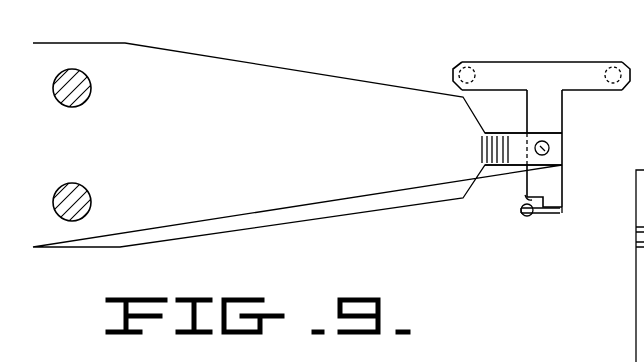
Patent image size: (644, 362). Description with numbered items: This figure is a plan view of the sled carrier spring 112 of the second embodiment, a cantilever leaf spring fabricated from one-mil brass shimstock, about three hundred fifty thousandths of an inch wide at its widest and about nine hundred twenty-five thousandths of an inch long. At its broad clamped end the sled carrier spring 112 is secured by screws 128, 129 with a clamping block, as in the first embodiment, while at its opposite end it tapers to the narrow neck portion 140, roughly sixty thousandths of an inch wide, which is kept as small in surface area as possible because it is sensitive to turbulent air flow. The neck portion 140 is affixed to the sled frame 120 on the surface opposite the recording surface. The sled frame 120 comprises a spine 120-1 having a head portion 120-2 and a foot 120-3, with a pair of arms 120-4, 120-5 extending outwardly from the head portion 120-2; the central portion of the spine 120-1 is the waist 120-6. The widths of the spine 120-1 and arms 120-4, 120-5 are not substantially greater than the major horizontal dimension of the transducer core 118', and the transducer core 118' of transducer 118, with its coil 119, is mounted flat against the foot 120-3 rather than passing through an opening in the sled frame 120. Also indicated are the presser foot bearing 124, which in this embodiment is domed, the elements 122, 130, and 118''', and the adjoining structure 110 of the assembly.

The sled carrier spring 112 is at (223, 155).
The screw 128 is at (92, 84).
The screw 129 is at (92, 198).
The narrow neck portion 140 is at (494, 148).
The presser foot bearing 124 is at (538, 140).
The hole 122 is at (453, 75).
The sled frame 120 is at (544, 109).
The spine 120-1 is at (556, 123).
The head portion 120-2 is at (533, 68).
The foot 120-3 is at (557, 195).
The arm 120-4 is at (493, 65).
The arm 120-5 is at (643, 50).
The waist 120-6 is at (552, 152).
The notch 130 is at (525, 200).
The transducer 118 is at (552, 242).
The coil 119 is at (528, 218).
The transducer core 118' is at (588, 226).
The pin end 118''' is at (495, 230).
The frame member 110 is at (643, 350).